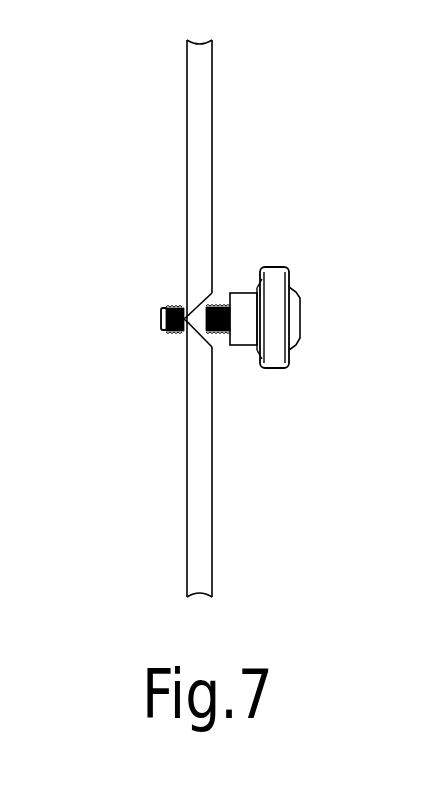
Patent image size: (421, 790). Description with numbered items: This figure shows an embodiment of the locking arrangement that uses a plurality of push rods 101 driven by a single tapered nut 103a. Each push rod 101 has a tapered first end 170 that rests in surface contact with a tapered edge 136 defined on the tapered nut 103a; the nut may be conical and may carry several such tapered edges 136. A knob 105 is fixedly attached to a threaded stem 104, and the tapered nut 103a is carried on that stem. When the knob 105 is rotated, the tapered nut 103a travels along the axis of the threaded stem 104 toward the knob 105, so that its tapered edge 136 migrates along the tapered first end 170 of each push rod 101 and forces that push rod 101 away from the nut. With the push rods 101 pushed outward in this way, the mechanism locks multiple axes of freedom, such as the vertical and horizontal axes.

The push rod 101 is at (198, 102).
The tapered first end 170 is at (202, 284).
The tapered edge 136 is at (178, 305).
The threaded stem 104 is at (163, 313).
The tapered nut 103a is at (162, 325).
The knob 105 is at (275, 277).